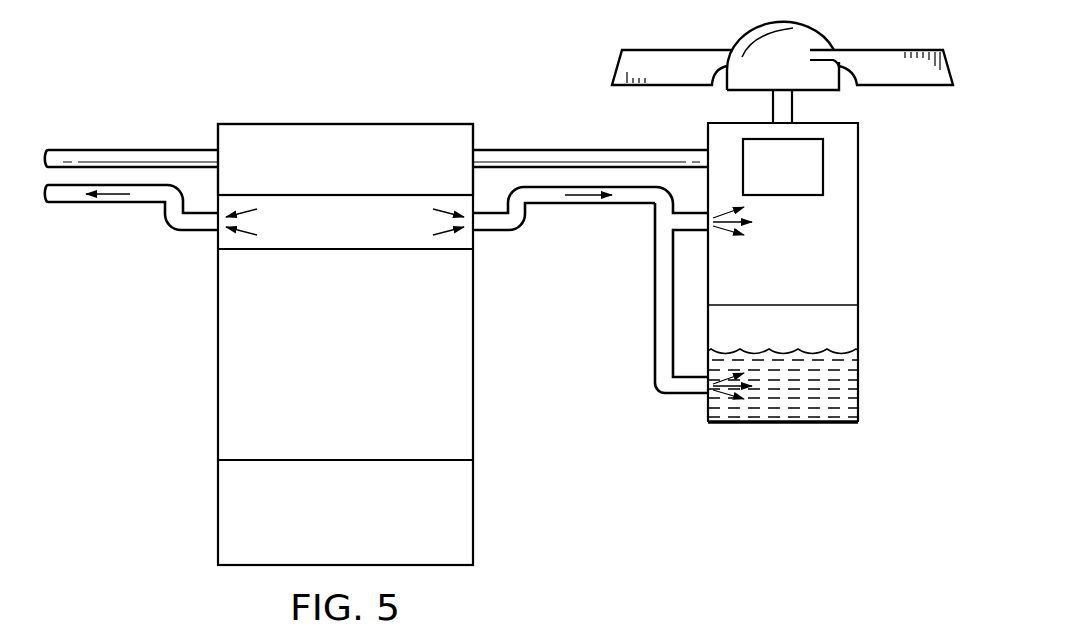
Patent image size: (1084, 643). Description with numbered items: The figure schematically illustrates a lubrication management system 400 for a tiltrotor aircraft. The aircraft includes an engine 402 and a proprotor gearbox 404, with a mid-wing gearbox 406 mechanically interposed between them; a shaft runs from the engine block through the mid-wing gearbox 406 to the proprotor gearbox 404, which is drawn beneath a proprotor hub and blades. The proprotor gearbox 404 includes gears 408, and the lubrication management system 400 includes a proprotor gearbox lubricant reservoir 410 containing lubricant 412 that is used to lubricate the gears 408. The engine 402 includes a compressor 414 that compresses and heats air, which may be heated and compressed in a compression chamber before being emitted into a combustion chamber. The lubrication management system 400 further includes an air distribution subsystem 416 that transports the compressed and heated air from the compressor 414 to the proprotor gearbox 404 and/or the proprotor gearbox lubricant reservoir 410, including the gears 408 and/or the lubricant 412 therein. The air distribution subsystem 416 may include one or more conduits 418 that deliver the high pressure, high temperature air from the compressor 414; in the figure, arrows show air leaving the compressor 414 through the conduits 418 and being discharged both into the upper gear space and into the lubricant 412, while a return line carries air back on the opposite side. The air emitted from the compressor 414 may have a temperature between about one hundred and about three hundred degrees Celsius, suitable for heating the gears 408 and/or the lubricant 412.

The lubrication management system 400 is at (126, 81).
The engine 402 is at (227, 356).
The proprotor gearbox 404 is at (848, 212).
The mid-wing gearbox 406 is at (346, 130).
The gears 408 is at (790, 197).
The proprotor gearbox lubricant reservoir 410 is at (848, 325).
The lubricant 412 is at (848, 403).
The compressor 414 is at (226, 233).
The air distribution subsystem 416 is at (650, 212).
The conduits 418 is at (561, 204).